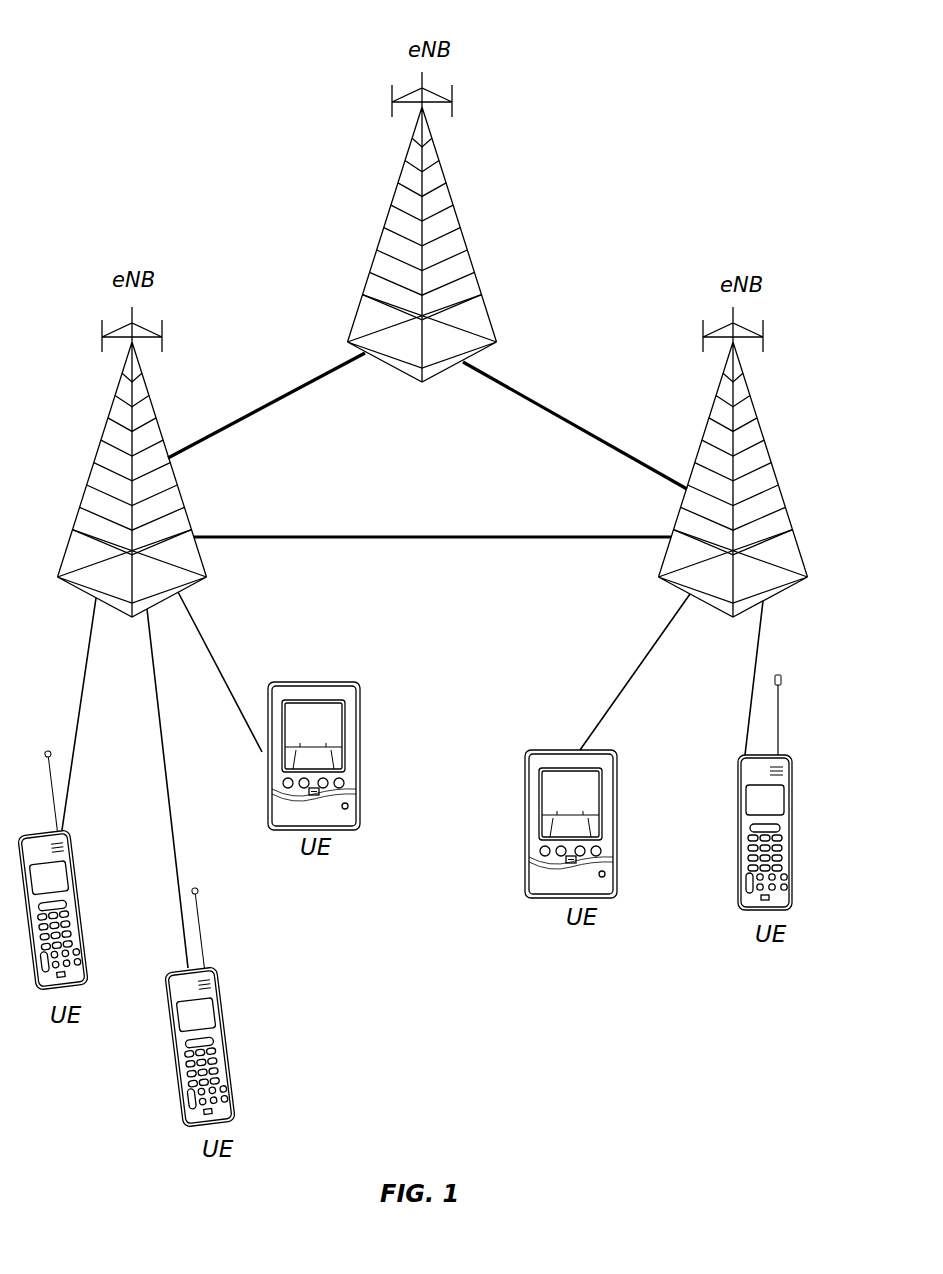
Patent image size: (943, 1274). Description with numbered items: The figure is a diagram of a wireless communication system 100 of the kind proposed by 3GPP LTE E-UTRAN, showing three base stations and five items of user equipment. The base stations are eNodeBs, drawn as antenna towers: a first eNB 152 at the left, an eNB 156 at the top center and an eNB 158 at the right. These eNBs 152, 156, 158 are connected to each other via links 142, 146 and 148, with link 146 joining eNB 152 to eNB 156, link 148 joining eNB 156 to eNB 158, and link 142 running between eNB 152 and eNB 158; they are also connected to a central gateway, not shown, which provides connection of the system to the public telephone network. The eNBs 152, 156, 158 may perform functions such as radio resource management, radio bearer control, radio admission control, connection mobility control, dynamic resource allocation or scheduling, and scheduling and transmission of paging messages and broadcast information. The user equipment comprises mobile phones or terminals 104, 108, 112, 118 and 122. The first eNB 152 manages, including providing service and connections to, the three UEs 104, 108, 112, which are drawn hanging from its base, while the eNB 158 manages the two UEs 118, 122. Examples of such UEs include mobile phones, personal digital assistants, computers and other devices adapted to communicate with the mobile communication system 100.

The wireless communication system 100 is at (108, 34).
The UE (mobile phone or terminal) 104 is at (80, 897).
The UE (mobile phone or terminal) 108 is at (218, 1008).
The UE (mobile phone or terminal) 112 is at (268, 790).
The UE (mobile phone or terminal) 118 is at (525, 790).
The UE (mobile phone or terminal) 122 is at (738, 832).
The link 142 is at (375, 535).
The link 146 is at (284, 396).
The link 148 is at (574, 424).
The eNB (base station) 152 is at (131, 321).
The eNB (base station) 156 is at (421, 87).
The eNB (base station) 158 is at (732, 321).